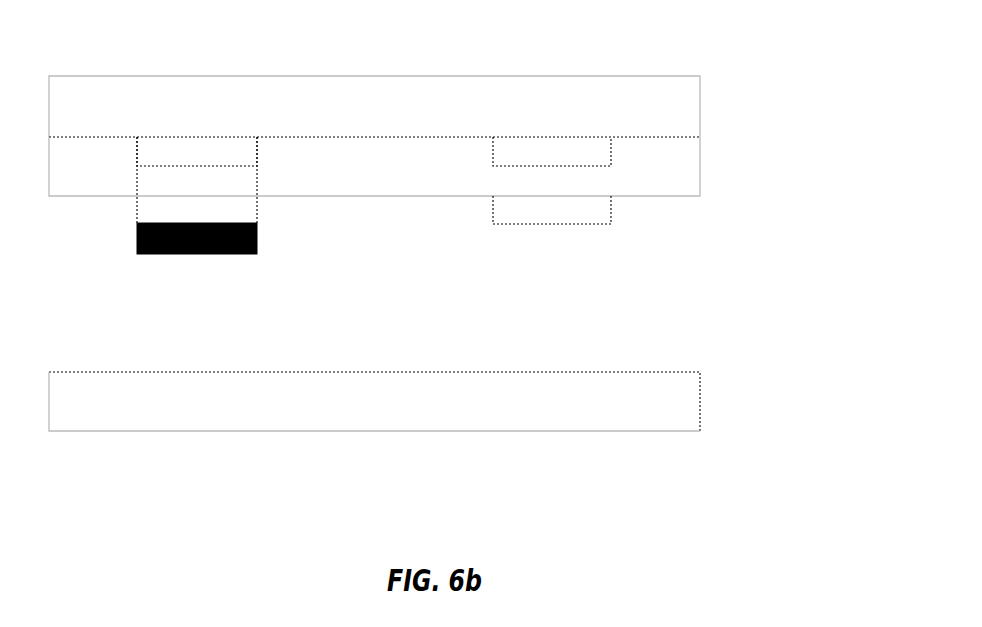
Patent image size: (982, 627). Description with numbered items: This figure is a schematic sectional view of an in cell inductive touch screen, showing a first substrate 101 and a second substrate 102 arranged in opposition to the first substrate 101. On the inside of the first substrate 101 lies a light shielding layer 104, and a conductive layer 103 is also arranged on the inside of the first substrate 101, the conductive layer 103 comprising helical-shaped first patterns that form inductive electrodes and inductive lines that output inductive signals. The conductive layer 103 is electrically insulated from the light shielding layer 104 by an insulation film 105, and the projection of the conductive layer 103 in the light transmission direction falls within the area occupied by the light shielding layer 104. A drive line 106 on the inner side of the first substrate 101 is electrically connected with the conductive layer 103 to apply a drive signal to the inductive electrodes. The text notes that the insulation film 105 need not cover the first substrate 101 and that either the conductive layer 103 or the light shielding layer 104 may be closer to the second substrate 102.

The first substrate 101 is at (700, 111).
The second substrate 102 is at (700, 402).
The conductive layer 103 is at (611, 217).
The light shielding layer 104 is at (611, 157).
The insulation film 105 is at (700, 184).
The drive line 106 is at (257, 239).